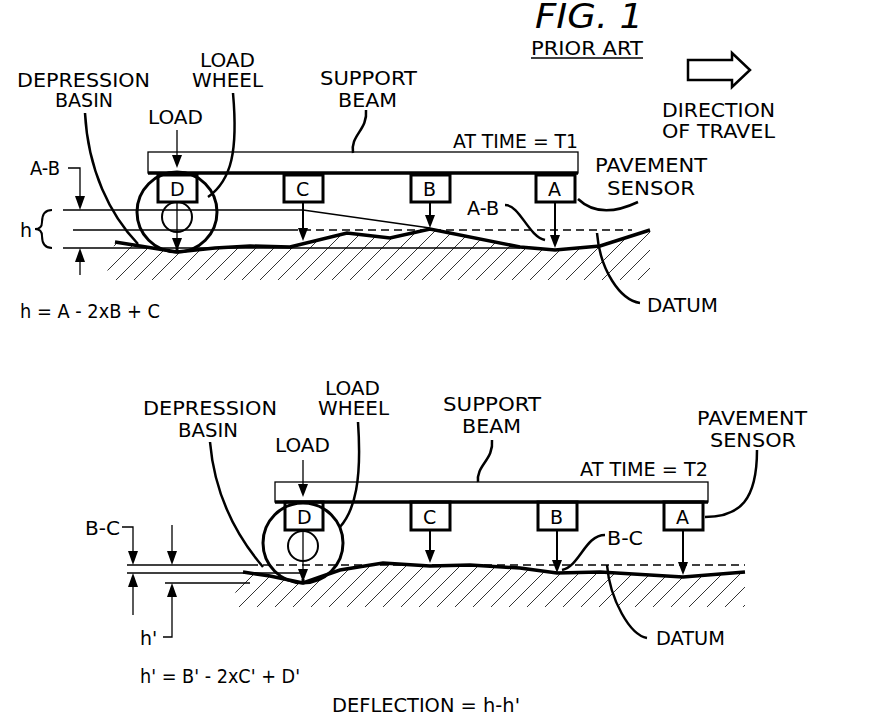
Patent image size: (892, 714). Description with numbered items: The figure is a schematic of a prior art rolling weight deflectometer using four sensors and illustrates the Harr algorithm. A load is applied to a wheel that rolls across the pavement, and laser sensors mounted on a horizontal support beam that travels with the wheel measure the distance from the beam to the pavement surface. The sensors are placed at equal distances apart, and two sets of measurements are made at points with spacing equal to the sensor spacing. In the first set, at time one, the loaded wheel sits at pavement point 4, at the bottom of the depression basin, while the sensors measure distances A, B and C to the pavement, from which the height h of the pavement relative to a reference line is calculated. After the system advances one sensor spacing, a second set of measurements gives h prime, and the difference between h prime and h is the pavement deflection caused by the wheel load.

The pavement point P4 4 is at (175, 264).